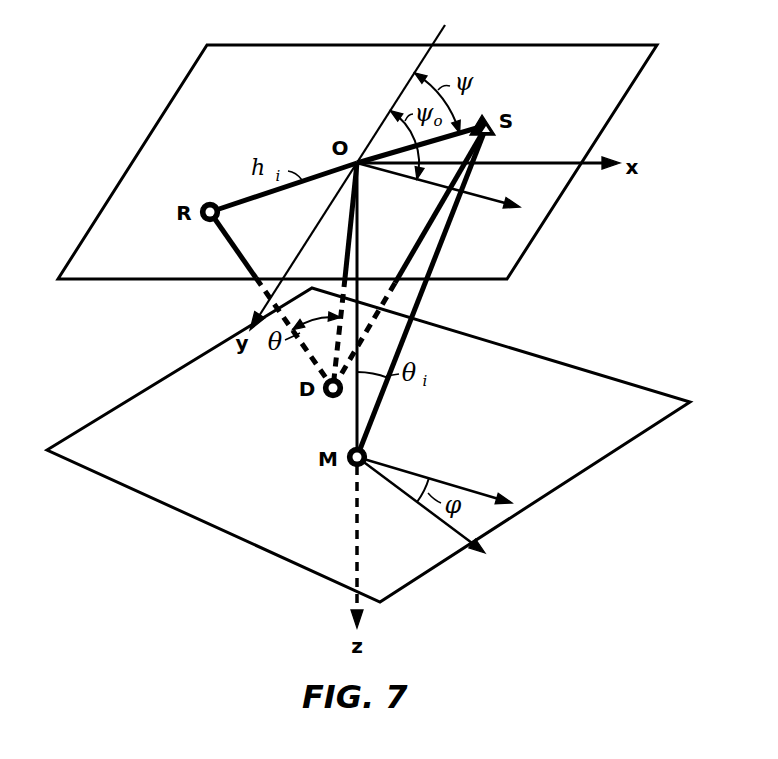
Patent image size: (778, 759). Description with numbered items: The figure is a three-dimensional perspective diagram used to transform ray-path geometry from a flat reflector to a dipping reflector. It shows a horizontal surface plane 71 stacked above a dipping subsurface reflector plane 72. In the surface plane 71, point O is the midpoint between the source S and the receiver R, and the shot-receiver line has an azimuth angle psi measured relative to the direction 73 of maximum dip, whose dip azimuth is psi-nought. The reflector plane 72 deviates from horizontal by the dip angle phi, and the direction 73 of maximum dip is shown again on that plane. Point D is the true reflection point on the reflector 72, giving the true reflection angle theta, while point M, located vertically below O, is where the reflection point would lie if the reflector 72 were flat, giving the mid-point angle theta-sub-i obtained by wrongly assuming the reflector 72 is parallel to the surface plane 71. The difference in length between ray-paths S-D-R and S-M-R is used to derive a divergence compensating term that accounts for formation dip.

The horizontal surface plane 71 is at (529, 92).
The dipping subsurface reflector plane 72 is at (504, 414).
The direction of maximum dip 73 is at (483, 197).